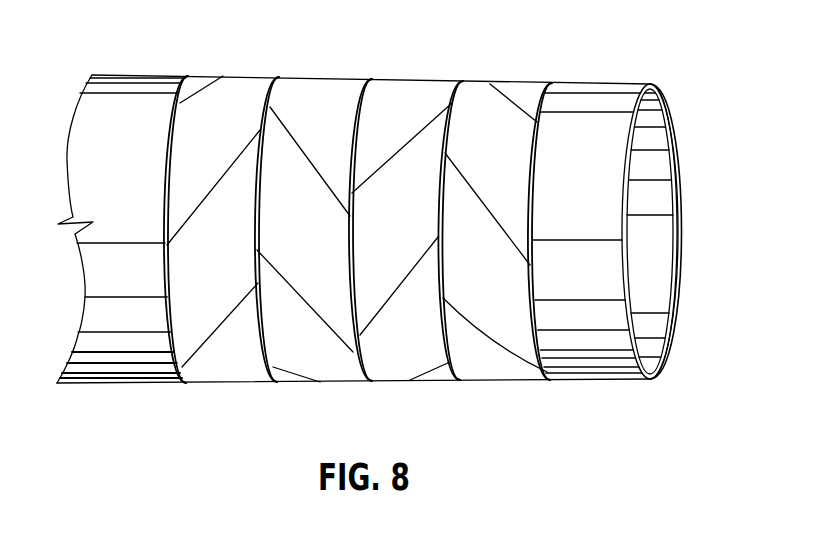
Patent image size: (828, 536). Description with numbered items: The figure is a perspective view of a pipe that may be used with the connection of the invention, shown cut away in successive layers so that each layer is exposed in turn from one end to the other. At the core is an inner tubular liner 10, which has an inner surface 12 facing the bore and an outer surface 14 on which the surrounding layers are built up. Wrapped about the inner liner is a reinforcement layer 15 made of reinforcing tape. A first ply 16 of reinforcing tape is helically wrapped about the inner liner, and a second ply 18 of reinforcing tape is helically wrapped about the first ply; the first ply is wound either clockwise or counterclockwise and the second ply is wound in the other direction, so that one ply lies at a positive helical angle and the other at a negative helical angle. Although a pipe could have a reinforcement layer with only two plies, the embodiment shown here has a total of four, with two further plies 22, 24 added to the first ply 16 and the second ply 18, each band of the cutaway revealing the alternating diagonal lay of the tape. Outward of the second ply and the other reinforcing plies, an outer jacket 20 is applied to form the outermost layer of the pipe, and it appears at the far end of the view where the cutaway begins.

The inner tubular liner 10 is at (652, 303).
The inner surface 12 is at (647, 145).
The outer surface 14 is at (580, 123).
The reinforcement layer 15 is at (199, 386).
The first ply of reinforcing tape 16 is at (485, 108).
The second ply of reinforcing tape 18 is at (400, 97).
The outer jacket 20 is at (122, 370).
The further ply of reinforcing tape 22 is at (320, 103).
The further ply of reinforcing tape 24 is at (215, 80).